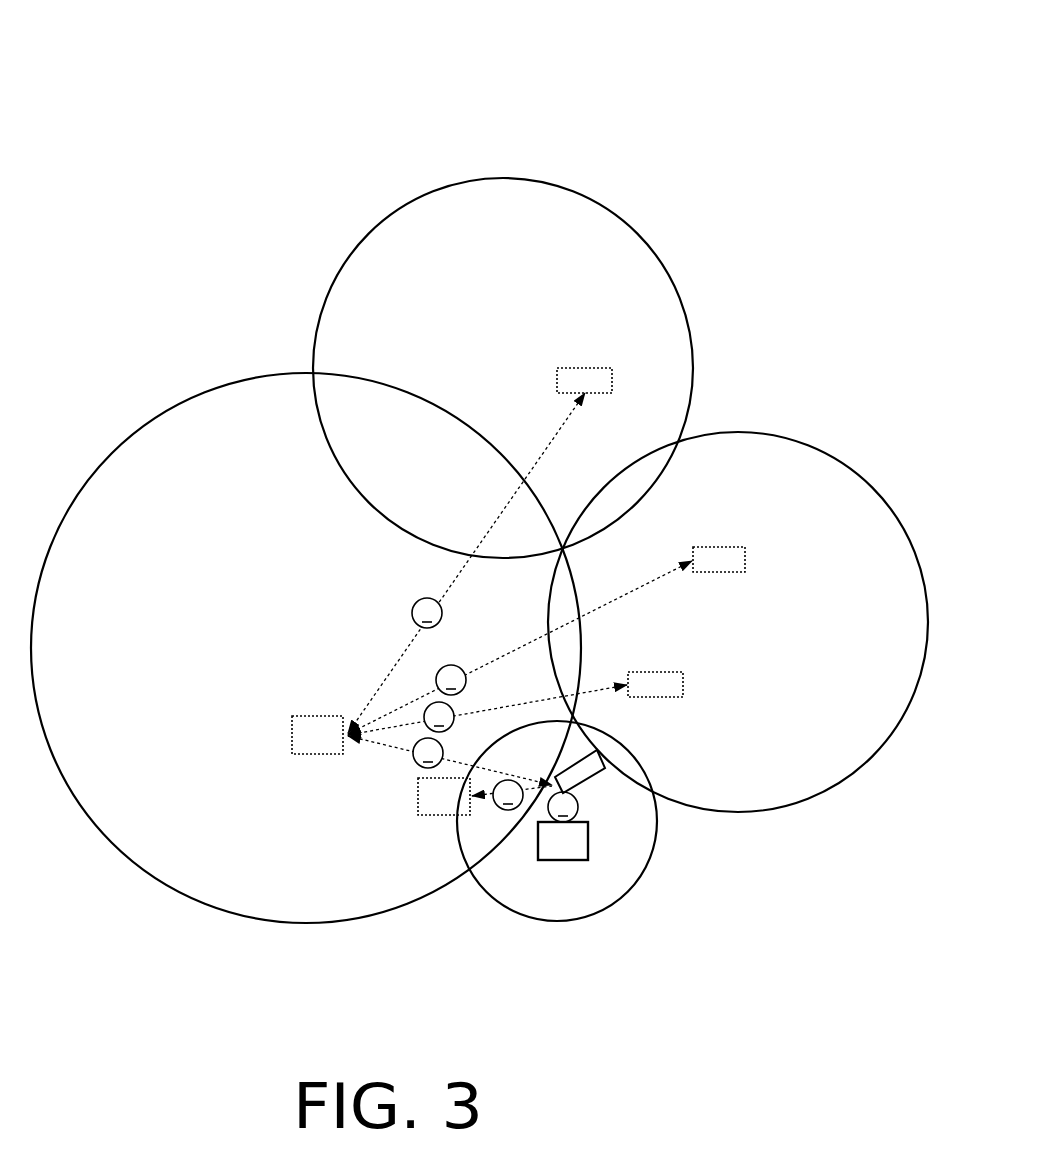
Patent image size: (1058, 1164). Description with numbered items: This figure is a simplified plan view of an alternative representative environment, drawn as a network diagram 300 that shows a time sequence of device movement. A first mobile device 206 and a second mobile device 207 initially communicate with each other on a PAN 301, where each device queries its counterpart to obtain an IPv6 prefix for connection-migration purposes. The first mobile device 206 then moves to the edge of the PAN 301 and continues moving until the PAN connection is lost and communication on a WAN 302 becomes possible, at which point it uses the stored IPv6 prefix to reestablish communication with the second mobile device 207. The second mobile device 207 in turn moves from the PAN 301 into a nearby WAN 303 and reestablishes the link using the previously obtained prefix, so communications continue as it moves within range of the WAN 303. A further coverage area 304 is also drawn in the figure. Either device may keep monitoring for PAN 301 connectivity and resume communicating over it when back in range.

The network diagram 300 is at (508, 58).
The PAN 301 is at (540, 910).
The WAN 302 is at (294, 911).
The WAN 303 is at (724, 806).
The coverage area of fourth access point 304 is at (483, 211).
The first mobile device 206 is at (335, 746).
The second mobile device 207 is at (602, 391).